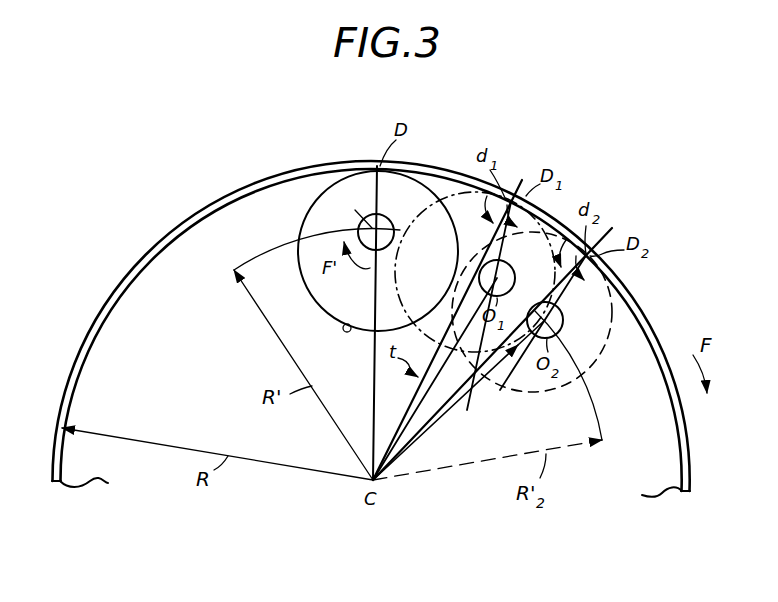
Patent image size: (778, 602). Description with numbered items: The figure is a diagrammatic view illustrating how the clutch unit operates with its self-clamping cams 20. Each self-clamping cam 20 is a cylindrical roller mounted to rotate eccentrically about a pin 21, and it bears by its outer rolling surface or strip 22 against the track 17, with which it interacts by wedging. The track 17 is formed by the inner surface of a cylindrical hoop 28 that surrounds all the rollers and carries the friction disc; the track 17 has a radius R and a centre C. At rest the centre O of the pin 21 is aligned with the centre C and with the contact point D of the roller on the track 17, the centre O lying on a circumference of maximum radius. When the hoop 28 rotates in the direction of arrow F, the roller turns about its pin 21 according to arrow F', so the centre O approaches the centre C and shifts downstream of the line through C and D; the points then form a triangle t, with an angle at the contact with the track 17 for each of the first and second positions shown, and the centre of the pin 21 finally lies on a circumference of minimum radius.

The track 17 is at (122, 308).
The cylindrical hoop 28 is at (175, 216).
The self-clamping cam 20 is at (306, 284).
The pin 21 is at (394, 224).
The outer rolling surface or strip 22 is at (350, 324).